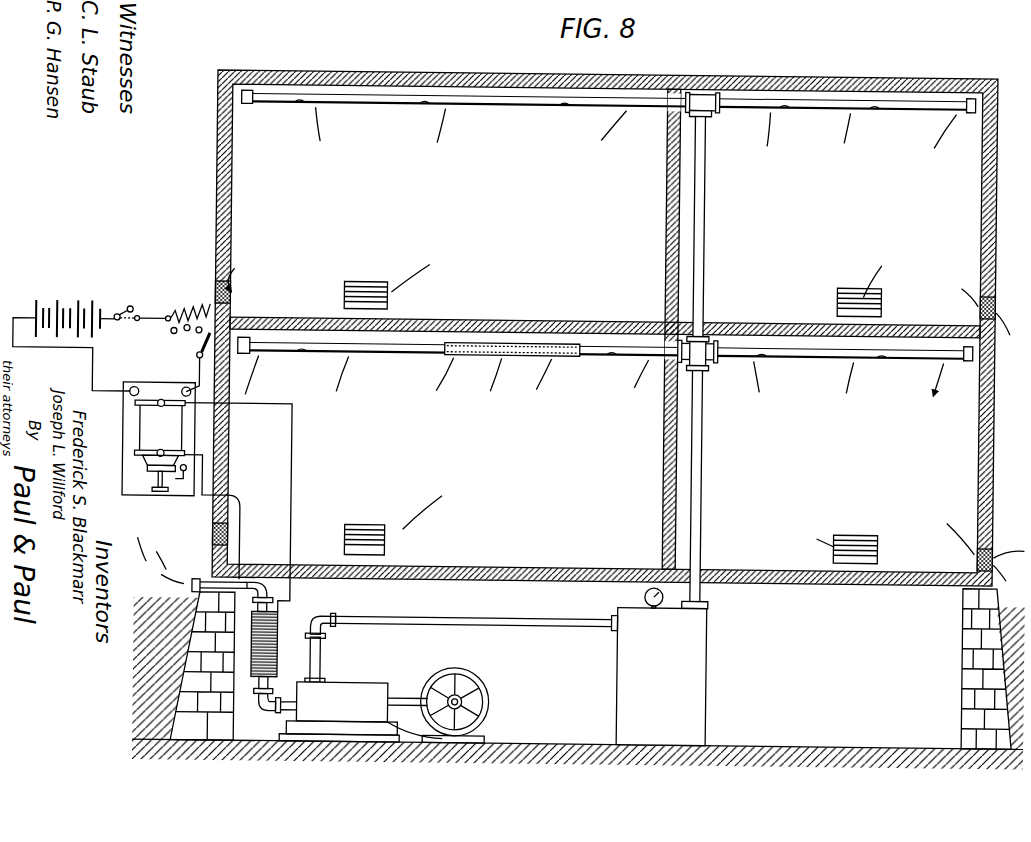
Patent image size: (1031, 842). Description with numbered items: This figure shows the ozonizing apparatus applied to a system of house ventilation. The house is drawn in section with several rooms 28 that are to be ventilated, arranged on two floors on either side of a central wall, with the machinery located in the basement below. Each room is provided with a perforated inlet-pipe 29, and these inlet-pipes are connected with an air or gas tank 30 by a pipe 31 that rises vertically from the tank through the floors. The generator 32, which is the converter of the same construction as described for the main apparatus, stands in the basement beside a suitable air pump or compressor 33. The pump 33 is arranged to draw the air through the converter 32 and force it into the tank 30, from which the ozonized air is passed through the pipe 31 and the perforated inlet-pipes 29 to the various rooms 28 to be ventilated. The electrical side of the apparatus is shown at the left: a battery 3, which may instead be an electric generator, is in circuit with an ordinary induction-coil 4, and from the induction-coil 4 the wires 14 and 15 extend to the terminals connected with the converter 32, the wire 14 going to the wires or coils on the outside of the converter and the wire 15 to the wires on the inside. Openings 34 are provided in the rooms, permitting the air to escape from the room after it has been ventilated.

The battery 3 is at (57, 303).
The induction-coil 4 is at (158, 439).
The wire 14 is at (243, 500).
The wire 15 is at (297, 482).
The rooms 28 is at (663, 332).
The perforated inlet-pipes 29 is at (606, 246).
The tank 30 is at (702, 651).
The pipe 31 is at (707, 548).
The generator 32 is at (288, 630).
The air pump or compressor 33 is at (363, 681).
The openings 34 is at (982, 553).